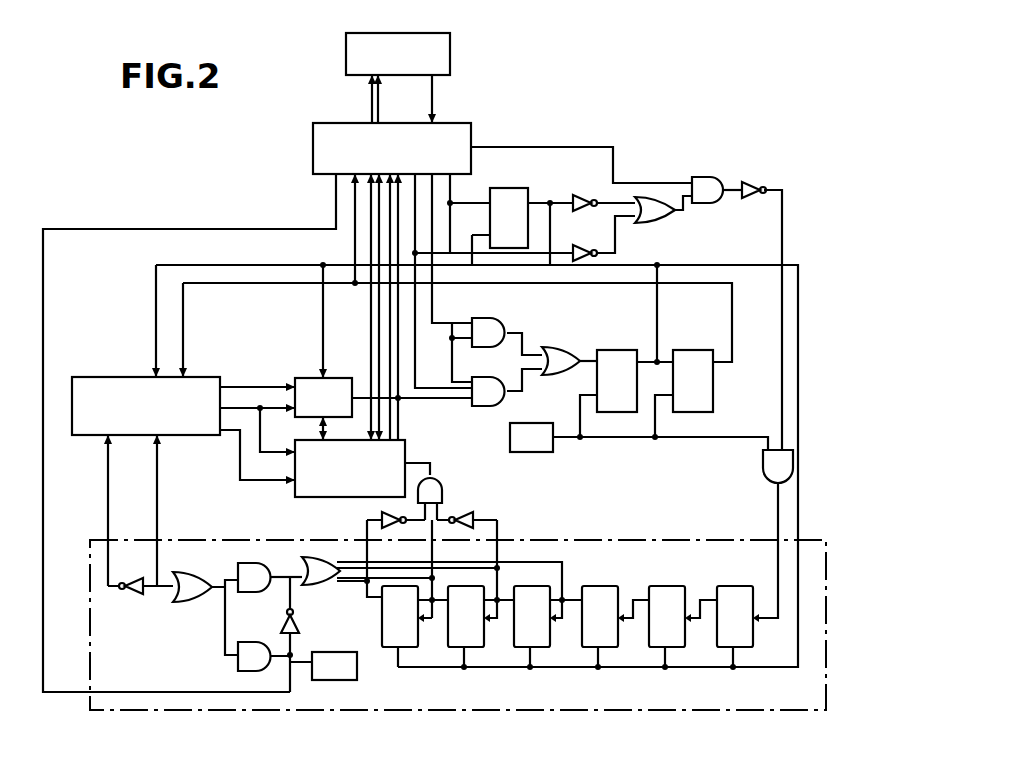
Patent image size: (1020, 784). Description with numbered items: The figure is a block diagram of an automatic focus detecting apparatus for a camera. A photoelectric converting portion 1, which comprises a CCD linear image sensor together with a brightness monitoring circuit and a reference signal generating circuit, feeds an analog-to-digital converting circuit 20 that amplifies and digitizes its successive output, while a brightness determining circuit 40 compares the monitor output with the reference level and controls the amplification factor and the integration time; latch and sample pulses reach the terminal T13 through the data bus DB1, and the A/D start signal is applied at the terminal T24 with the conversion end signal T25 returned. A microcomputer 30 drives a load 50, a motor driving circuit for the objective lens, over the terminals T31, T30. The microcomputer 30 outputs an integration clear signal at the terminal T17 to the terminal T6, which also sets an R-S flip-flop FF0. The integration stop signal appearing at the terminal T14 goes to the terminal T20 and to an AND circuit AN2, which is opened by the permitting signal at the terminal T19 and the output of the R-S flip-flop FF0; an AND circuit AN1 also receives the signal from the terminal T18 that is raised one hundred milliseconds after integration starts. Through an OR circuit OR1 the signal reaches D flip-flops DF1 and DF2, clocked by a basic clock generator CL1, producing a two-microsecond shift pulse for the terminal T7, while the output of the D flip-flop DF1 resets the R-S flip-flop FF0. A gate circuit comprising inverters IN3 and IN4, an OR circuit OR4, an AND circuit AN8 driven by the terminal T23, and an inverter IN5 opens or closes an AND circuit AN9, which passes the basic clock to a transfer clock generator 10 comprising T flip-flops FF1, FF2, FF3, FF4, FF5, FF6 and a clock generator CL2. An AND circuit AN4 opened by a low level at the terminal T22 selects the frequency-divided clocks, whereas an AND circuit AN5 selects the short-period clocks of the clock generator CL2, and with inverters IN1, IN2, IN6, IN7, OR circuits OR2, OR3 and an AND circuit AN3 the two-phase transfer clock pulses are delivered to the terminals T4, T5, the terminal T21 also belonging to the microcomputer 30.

The load 50 is at (450, 47).
The microcomputer 30 is at (313, 140).
The photoelectric converting portion 1 is at (98, 377).
The brightness determining circuit 40 is at (340, 378).
The analog-to-digital converting circuit 20 is at (295, 492).
The transfer clock generator 10 is at (826, 622).
The terminal T31 is at (370, 90).
The terminal T30 is at (434, 95).
The terminal T23 is at (538, 147).
The terminal T22 is at (336, 191).
The terminal T21 is at (355, 210).
The terminal T20 is at (388, 236).
The terminal T19 is at (418, 235).
The terminal T18 is at (441, 190).
The terminal T17 is at (450, 240).
The terminal T6 is at (156, 310).
The terminal T7 is at (183, 310).
The terminal T13 is at (323, 350).
The terminal T14 is at (400, 400).
The analog-to-digital convertion end signal T25 is at (392, 422).
The terminal T24 is at (432, 463).
The terminal T4 is at (108, 478).
The terminal T5 is at (157, 478).
The data bus DB1 is at (371, 312).
The R-S flip-flop FF0 is at (497, 188).
The inverter IN3 is at (580, 196).
The inverter IN4 is at (583, 246).
The OR circuit OR4 is at (663, 223).
The AND circuit AN8 is at (703, 177).
The inverter IN5 is at (752, 180).
The AND circuit AN1 is at (498, 318).
The AND circuit AN2 is at (500, 400).
The OR circuit OR1 is at (558, 350).
The D flip-flop DF1 is at (617, 350).
The D flip-flop DF2 is at (697, 350).
The basic clock generator CL1 is at (530, 452).
The AND circuit AN9 is at (763, 460).
The AND circuit AN3 is at (442, 492).
The inverter IN6 is at (380, 520).
The inverter IN7 is at (476, 520).
The AND circuit AN4 is at (240, 563).
The OR circuit OR2 is at (303, 585).
The inverter IN2 is at (128, 596).
The OR circuit OR3 is at (195, 602).
The inverter IN1 is at (282, 618).
The clock generator CL2 is at (315, 652).
The AND circuit AN5 is at (240, 666).
The T flip-flop FF1 is at (723, 652).
The T flip-flop FF2 is at (653, 650).
The T flip-flop FF3 is at (586, 650).
The T flip-flop FF4 is at (518, 650).
The T flip-flop FF5 is at (452, 650).
The T flip-flop FF6 is at (386, 650).